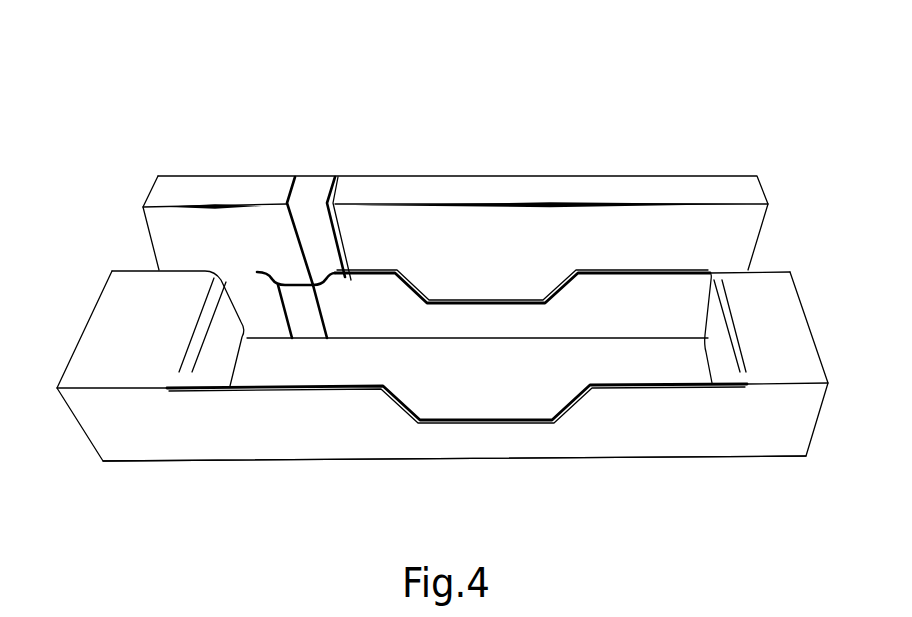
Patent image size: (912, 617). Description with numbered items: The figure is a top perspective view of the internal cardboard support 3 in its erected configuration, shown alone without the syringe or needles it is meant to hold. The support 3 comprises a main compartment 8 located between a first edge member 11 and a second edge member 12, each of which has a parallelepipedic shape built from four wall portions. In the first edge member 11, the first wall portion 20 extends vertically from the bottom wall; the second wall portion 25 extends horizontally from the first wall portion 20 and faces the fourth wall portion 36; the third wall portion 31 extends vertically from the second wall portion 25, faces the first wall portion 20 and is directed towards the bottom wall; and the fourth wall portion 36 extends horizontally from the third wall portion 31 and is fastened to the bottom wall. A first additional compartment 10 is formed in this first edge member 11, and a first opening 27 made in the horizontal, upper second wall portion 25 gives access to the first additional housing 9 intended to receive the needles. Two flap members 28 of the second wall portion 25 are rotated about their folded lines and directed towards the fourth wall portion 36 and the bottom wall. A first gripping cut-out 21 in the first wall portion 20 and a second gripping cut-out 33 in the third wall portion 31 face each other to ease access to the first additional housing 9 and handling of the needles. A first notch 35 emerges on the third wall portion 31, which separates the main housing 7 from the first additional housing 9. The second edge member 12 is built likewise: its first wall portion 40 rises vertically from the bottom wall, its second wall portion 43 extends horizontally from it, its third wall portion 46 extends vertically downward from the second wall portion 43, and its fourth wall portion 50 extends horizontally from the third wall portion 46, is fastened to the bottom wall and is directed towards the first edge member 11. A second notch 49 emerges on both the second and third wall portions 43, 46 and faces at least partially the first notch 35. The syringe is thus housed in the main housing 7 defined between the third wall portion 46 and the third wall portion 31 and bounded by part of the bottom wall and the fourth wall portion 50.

The internal cardboard support 3 is at (146, 85).
The main housing 7 is at (694, 233).
The main compartment 8 is at (140, 257).
The first additional housing 9 is at (457, 408).
The first additional compartment 10 is at (643, 362).
The first edge member 11 is at (84, 330).
The second edge member 12 is at (158, 176).
The first wall portion 20 is at (153, 437).
The first gripping cut-out 21 is at (497, 422).
The second wall portion 25 is at (127, 339).
The first opening 27 is at (607, 370).
The flap members 28 is at (715, 343).
The third wall portion 31 is at (620, 319).
The second gripping cut-out 33 is at (513, 300).
The first notch 35 is at (294, 281).
The fourth wall portion 36 is at (480, 392).
The first wall portion 40 is at (313, 247).
The second wall portion 43 is at (558, 192).
The third wall portion 46 is at (588, 238).
The second notch 49 is at (309, 189).
The fourth wall portion 50 is at (307, 313).